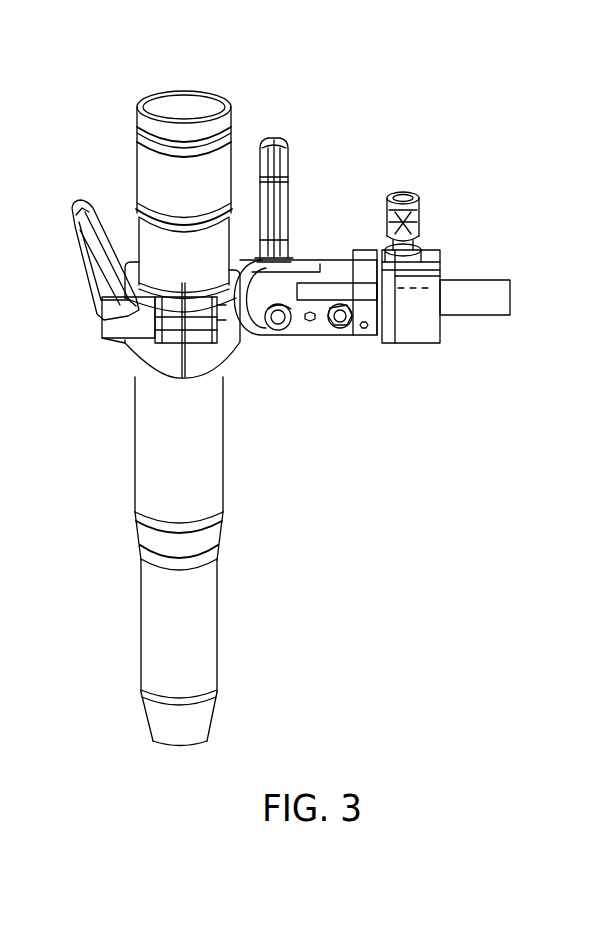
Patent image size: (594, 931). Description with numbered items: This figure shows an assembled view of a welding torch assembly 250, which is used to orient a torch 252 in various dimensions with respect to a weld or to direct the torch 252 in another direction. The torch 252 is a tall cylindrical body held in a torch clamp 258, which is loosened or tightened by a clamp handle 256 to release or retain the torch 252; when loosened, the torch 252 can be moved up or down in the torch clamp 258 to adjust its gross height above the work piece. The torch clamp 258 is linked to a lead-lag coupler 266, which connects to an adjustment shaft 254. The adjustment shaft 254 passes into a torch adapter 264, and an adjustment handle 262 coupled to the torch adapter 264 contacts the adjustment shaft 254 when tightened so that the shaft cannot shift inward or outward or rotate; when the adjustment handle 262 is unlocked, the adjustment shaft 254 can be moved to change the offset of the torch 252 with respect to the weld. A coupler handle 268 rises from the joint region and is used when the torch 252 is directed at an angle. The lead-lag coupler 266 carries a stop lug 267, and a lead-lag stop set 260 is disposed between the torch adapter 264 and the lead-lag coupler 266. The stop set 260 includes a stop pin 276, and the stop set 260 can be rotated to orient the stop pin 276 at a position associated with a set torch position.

The torch assembly 250 is at (399, 66).
The torch 252 is at (142, 143).
The adjustment shaft 254 is at (510, 287).
The clamp handle 256 is at (73, 245).
The torch clamp 258 is at (125, 352).
The lead-lag stop set 260 is at (365, 328).
The adjustment handle 262 is at (422, 218).
The torch adapter 264 is at (415, 373).
The lead-lag coupler 266 is at (289, 340).
The stop lug 267 is at (349, 338).
The coupler handle 268 is at (285, 163).
The stop pin 276 is at (341, 290).